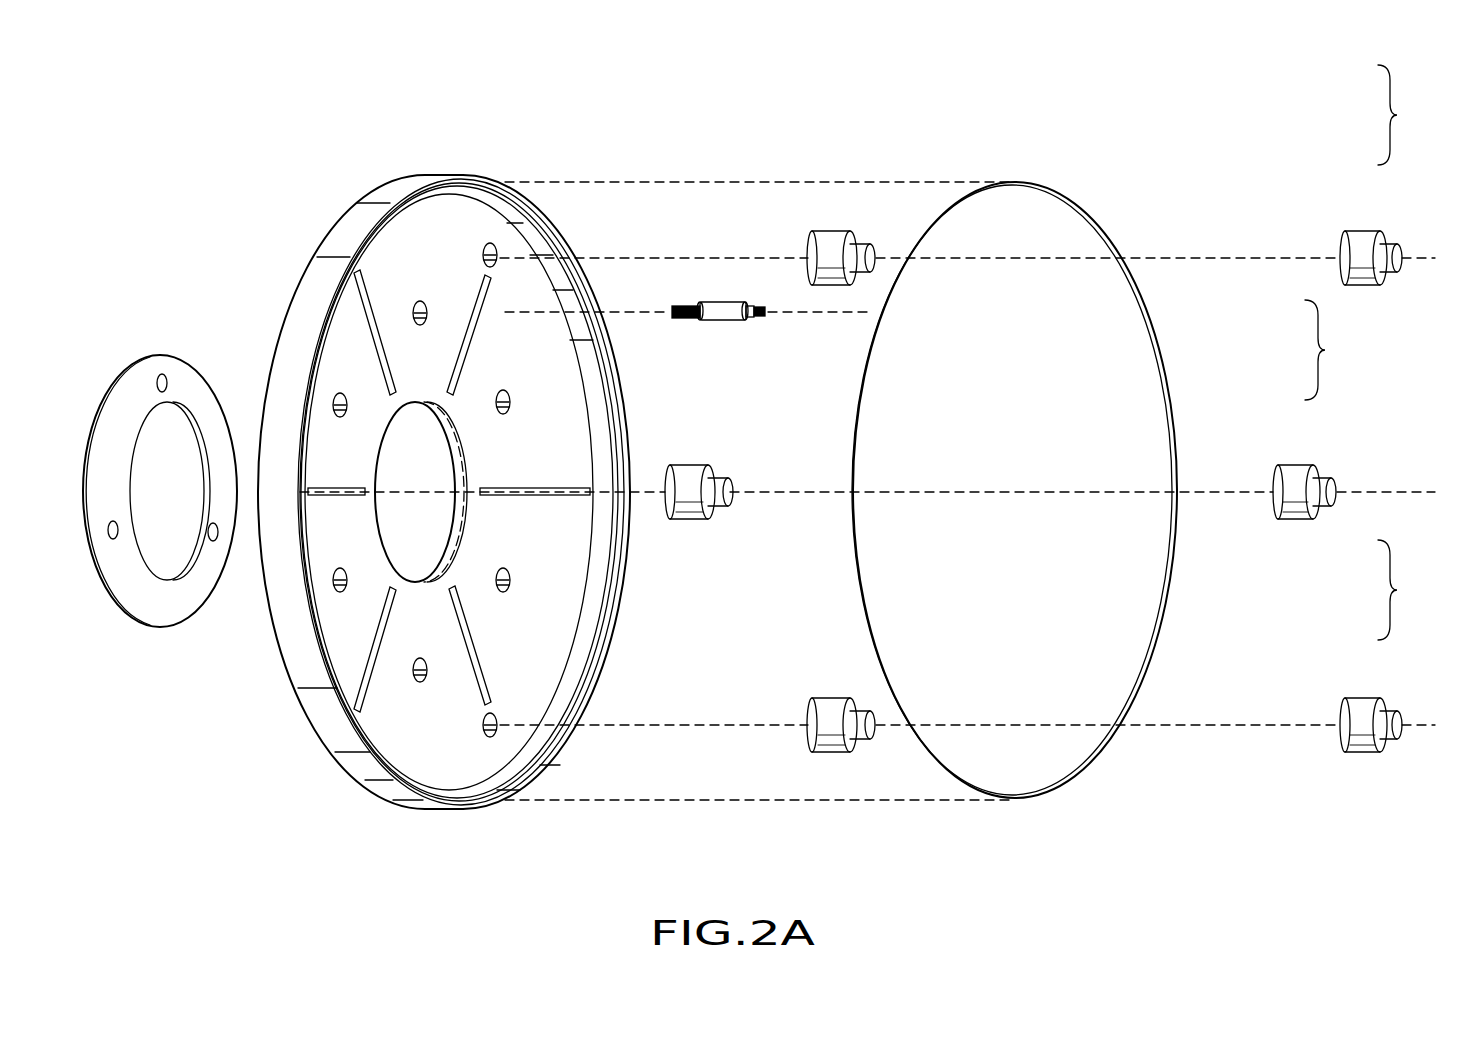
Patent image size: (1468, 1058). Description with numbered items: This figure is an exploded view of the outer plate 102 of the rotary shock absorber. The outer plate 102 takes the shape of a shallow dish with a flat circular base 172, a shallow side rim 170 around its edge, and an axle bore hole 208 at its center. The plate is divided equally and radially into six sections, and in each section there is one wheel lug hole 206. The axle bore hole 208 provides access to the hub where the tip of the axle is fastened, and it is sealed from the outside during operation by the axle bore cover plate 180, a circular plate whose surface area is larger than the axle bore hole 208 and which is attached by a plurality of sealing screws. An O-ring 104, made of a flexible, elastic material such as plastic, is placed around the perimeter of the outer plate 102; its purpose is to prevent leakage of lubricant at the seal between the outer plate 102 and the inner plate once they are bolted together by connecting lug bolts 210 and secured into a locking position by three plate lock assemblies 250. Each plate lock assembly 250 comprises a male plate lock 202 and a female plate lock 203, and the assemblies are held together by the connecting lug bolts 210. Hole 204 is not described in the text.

The outer plate 102 is at (477, 508).
The O-ring 104 is at (1090, 777).
The shallow side rim 170 is at (393, 797).
The flat circular base 172 is at (383, 270).
The axle bore cover plate 180 is at (163, 628).
The male plate lock 202 is at (845, 228).
The female plate lock 203 is at (1357, 230).
The mounting hole 204 is at (490, 243).
The wheel lug hole 206 is at (420, 325).
The axle bore hole 208 is at (448, 503).
The connecting lug bolt 210 is at (737, 322).
The plate lock assembly 250 is at (1374, 352).